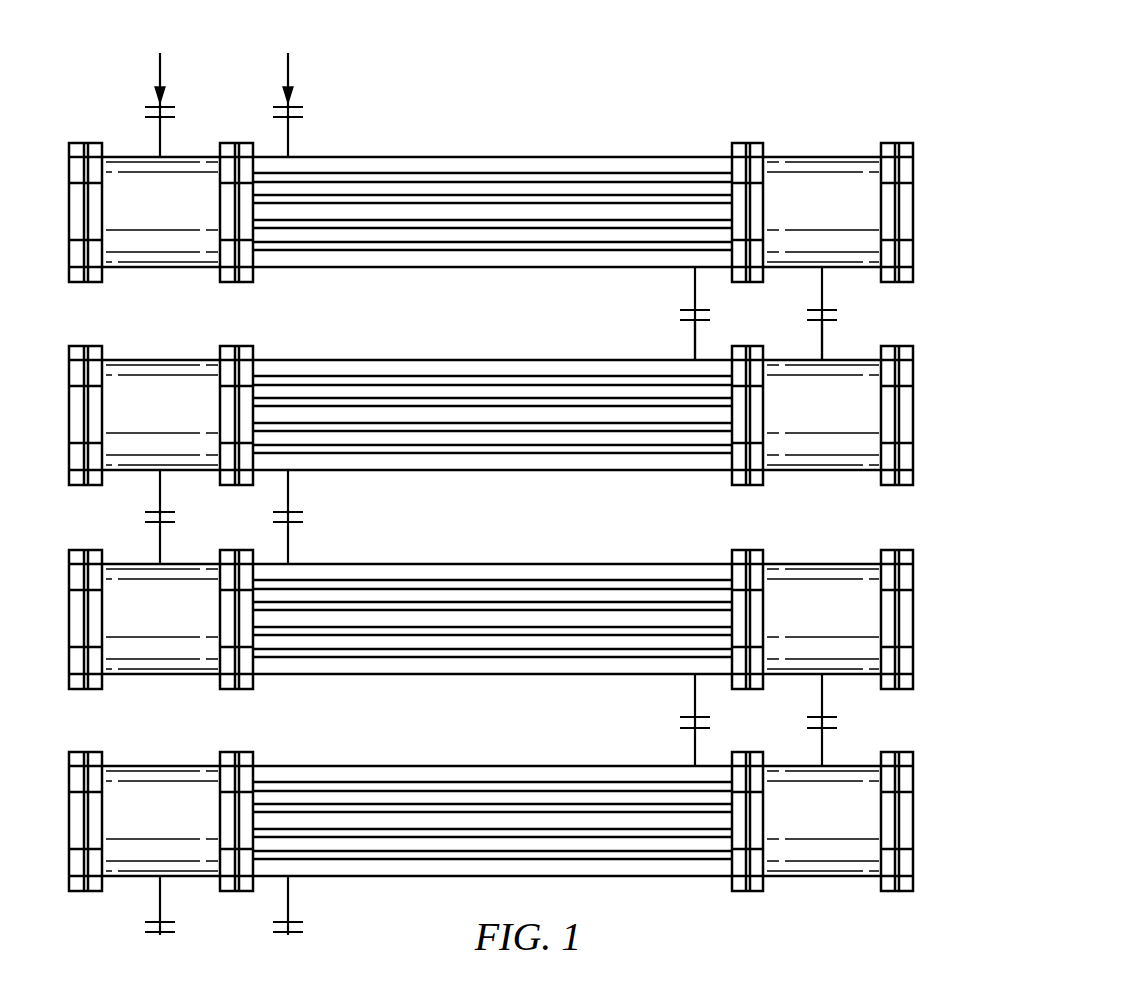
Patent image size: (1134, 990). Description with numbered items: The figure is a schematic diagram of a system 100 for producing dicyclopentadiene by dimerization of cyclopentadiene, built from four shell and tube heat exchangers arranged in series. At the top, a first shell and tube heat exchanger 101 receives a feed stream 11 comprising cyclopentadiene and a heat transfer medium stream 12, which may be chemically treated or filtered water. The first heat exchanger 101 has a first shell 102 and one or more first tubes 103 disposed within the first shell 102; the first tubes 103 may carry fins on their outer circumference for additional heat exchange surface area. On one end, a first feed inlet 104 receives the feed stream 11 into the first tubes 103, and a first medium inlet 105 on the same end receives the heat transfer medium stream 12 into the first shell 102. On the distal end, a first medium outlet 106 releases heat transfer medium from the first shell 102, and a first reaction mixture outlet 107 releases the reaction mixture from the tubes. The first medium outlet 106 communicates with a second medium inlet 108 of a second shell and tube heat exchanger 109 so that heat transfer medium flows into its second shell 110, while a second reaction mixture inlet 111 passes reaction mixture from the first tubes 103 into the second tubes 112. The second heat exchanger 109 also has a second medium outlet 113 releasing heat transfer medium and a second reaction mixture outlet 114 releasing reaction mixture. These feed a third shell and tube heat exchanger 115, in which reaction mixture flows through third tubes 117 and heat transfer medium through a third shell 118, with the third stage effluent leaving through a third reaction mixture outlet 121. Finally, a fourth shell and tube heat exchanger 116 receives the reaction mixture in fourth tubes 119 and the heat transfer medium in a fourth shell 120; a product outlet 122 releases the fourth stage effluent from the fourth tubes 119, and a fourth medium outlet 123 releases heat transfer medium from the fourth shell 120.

The system 100 is at (710, 28).
The feed stream 11 is at (162, 70).
The heat transfer medium stream 12 is at (290, 70).
The first shell and tube heat exchanger 101 is at (527, 201).
The first shell 102 is at (491, 201).
The first tubes 103 is at (492, 188).
The first feed inlet 104 is at (157, 137).
The first medium inlet 105 is at (290, 135).
The first medium outlet 106 is at (693, 285).
The first reaction mixture outlet 107 is at (823, 287).
The second medium inlet 108 is at (693, 340).
The second shell and tube heat exchanger 109 is at (528, 406).
The second shell 110 is at (491, 406).
The second reaction mixture inlet 111 is at (823, 345).
The second tubes 112 is at (492, 392).
The second medium outlet 113 is at (290, 490).
The second reaction mixture outlet 114 is at (158, 492).
The third shell and tube heat exchanger 115 is at (527, 609).
The fourth shell and tube heat exchanger 116 is at (527, 812).
The third tubes 117 is at (492, 595).
The third shell 118 is at (491, 609).
The fourth tubes 119 is at (492, 798).
The fourth shell 120 is at (491, 812).
The third reaction mixture outlet 121 is at (695, 692).
The product outlet 122 is at (158, 900).
The fourth medium outlet 123 is at (290, 897).